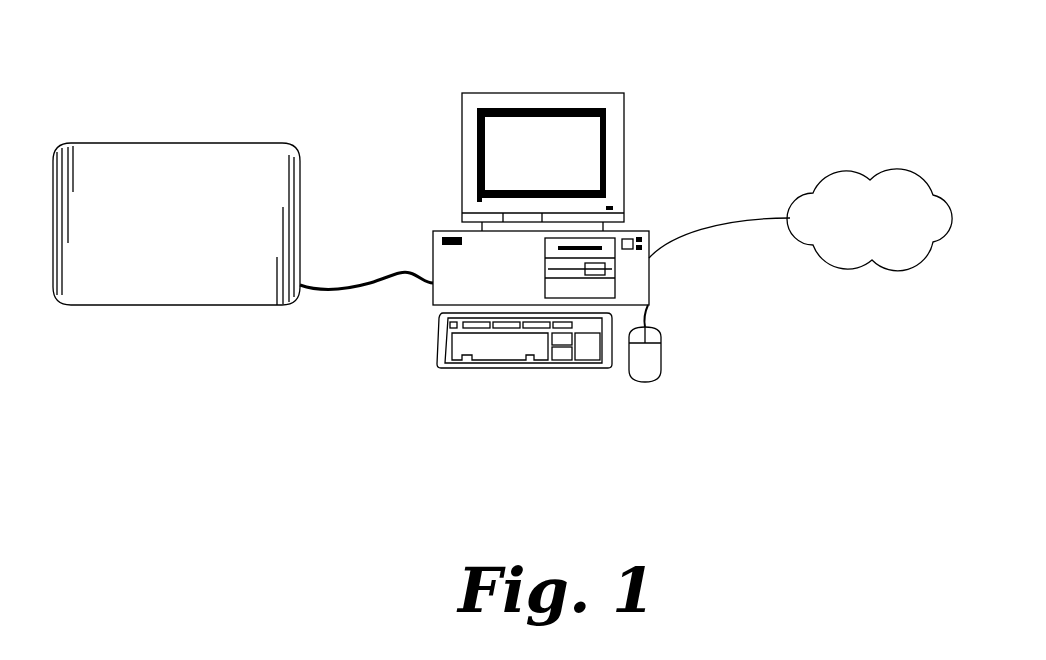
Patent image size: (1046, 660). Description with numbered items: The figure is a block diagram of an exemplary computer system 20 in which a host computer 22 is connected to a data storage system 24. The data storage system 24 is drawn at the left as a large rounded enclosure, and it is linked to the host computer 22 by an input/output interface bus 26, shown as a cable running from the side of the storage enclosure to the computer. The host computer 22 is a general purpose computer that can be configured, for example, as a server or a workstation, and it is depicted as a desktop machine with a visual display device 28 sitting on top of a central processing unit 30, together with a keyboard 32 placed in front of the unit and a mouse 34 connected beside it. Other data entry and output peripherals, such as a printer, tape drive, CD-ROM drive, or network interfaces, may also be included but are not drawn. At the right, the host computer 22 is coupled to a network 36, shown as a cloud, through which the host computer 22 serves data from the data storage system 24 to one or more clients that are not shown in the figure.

The computer system 20 is at (263, 47).
The host computer 22 is at (502, 47).
The data storage system 24 is at (175, 142).
The input/output (I/O) interface bus 26 is at (400, 272).
The visual display device 28 is at (625, 111).
The central processing unit (CPU) 30 is at (649, 285).
The keyboard 32 is at (440, 347).
The mouse 34 is at (662, 343).
The network 36 is at (848, 167).